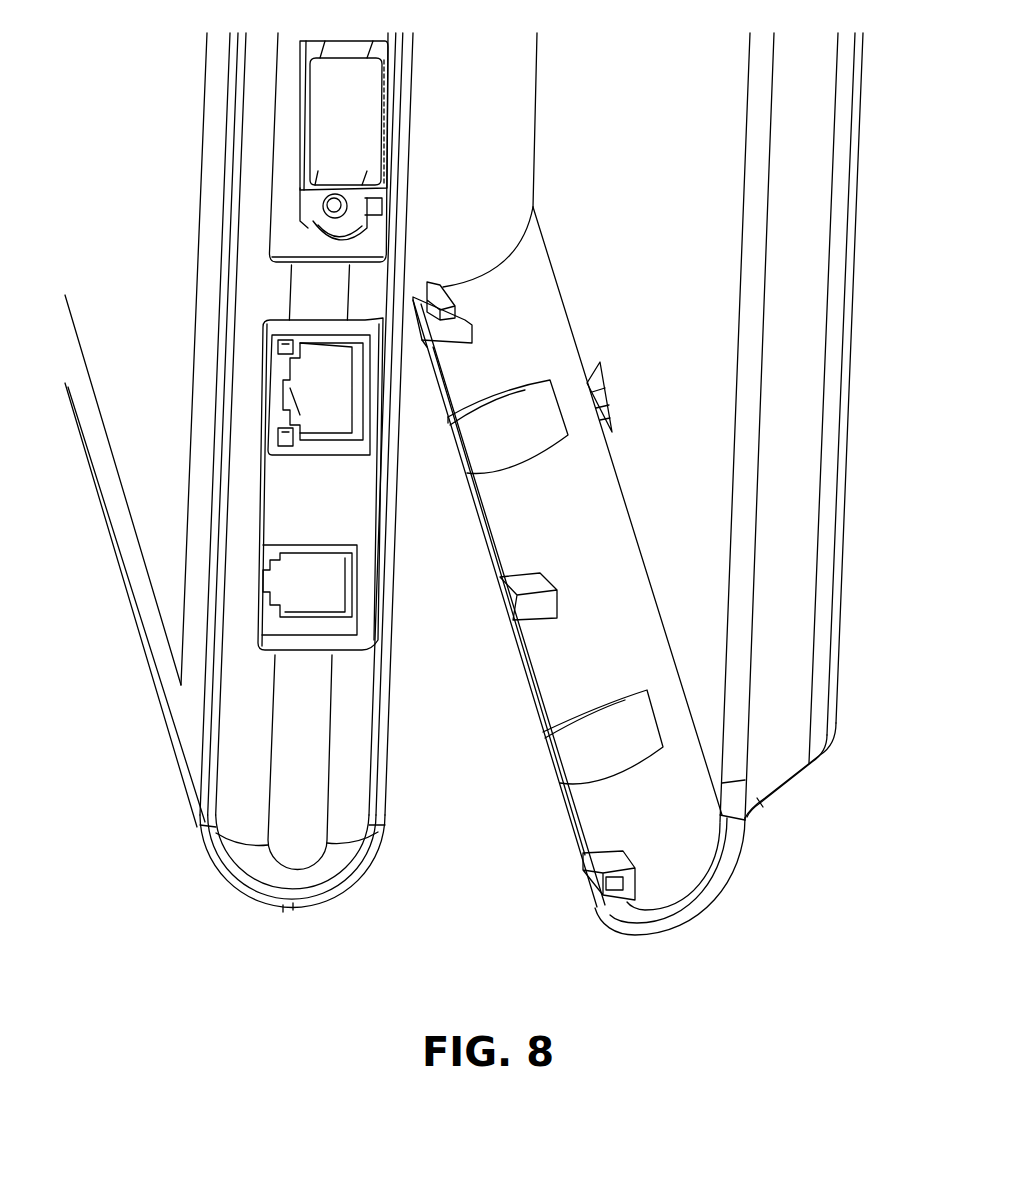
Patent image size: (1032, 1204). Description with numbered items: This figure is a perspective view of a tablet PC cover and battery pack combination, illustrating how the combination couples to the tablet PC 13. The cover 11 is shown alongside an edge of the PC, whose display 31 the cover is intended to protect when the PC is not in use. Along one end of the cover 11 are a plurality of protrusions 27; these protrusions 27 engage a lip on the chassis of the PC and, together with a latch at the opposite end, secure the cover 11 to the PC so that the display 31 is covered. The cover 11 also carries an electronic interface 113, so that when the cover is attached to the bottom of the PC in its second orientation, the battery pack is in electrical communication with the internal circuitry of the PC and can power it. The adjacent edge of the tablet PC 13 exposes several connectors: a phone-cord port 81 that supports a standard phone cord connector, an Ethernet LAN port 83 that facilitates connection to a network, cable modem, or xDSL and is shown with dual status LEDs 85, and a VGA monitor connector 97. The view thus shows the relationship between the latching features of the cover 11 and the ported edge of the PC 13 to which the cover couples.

The cover 11 is at (638, 178).
The tablet PC 13 is at (287, 927).
The protrusions 27 is at (440, 282).
The display 31 is at (148, 343).
The RJ-11 port 81 is at (340, 598).
The RJ-45 Ethernet LAN port 83 is at (340, 400).
The dual status LEDs 85 is at (273, 338).
The VGA monitor connector 97 is at (355, 122).
The electronic interface 113 is at (607, 377).